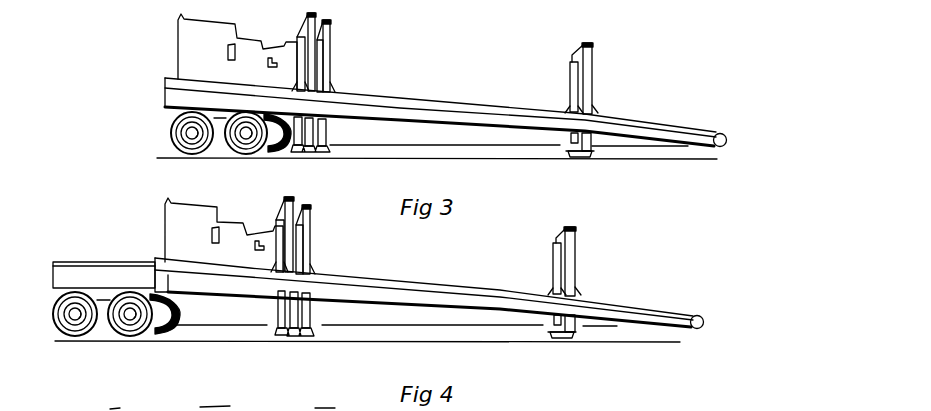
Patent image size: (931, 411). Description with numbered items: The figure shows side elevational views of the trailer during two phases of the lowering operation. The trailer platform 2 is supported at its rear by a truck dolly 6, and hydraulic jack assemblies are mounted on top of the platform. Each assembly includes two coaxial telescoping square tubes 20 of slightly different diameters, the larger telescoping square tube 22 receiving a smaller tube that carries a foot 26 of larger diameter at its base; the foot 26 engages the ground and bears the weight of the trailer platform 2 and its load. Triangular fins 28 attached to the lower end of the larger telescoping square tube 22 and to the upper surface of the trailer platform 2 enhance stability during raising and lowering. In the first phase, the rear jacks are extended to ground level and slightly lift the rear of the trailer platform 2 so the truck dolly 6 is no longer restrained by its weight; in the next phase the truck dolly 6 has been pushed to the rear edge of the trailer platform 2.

In FIG. 3, the trailer platform 2 is at (708, 114).
In FIG. 4, the truck dolly 6 is at (110, 248).
In FIG. 3, the coaxial telescoping square tubes 20 is at (597, 137).
In FIG. 4, the coaxial telescoping square tubes 20 is at (563, 280).
In FIG. 3, the larger telescoping square tube 22 is at (593, 63).
In FIG. 4, the larger telescoping square tube 22 is at (572, 255).
In FIG. 3, the foot 26 is at (588, 162).
In FIG. 4, the foot 26 is at (568, 336).
In FIG. 3, the triangular fins 28 is at (593, 112).
In FIG. 4, the triangular fins 28 is at (575, 298).